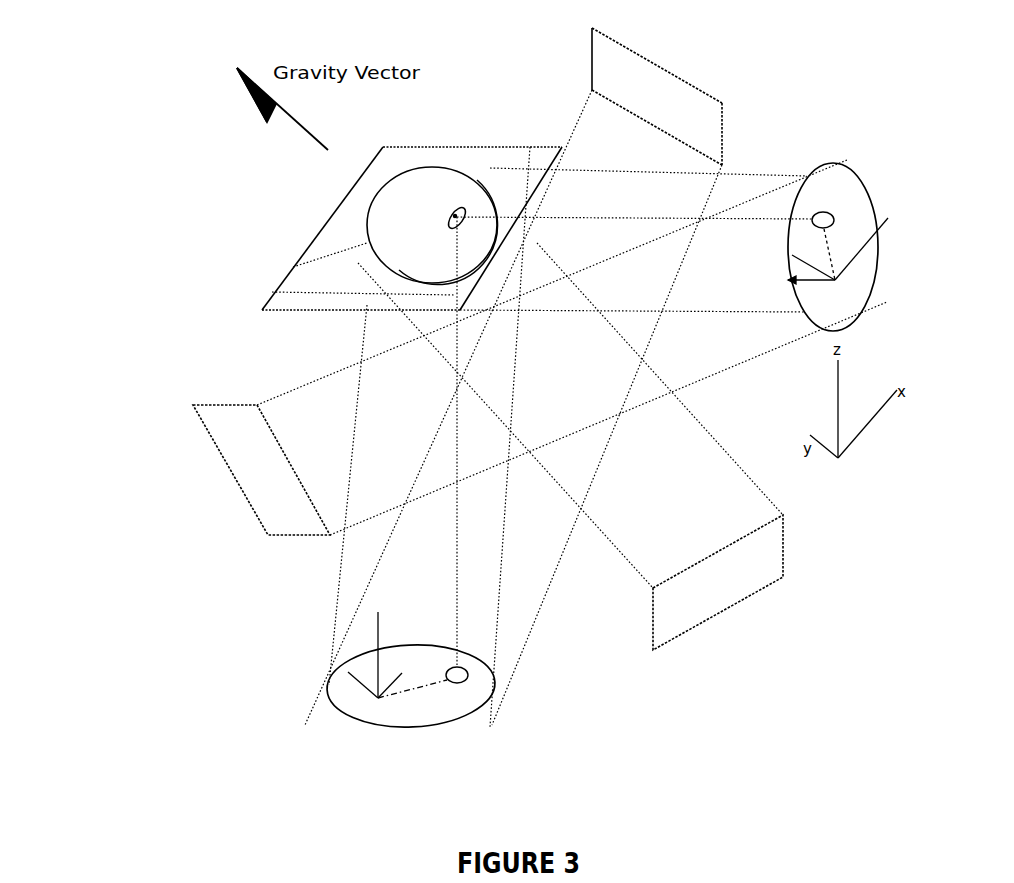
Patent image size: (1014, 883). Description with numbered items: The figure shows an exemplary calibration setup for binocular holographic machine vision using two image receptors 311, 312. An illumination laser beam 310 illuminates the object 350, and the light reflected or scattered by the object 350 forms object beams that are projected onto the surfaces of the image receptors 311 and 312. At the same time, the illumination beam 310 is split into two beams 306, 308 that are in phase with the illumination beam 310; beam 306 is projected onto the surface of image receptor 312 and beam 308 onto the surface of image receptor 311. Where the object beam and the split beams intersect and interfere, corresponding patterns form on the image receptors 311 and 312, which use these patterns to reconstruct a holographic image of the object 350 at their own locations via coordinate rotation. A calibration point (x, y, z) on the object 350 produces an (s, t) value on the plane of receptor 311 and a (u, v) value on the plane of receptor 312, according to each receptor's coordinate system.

The beam 306 is at (176, 470).
The beam 308 is at (747, 91).
The illumination laser beam 310 is at (718, 582).
The image receptor 311 is at (410, 688).
The image receptor 312 is at (842, 247).
The object 350 is at (432, 226).